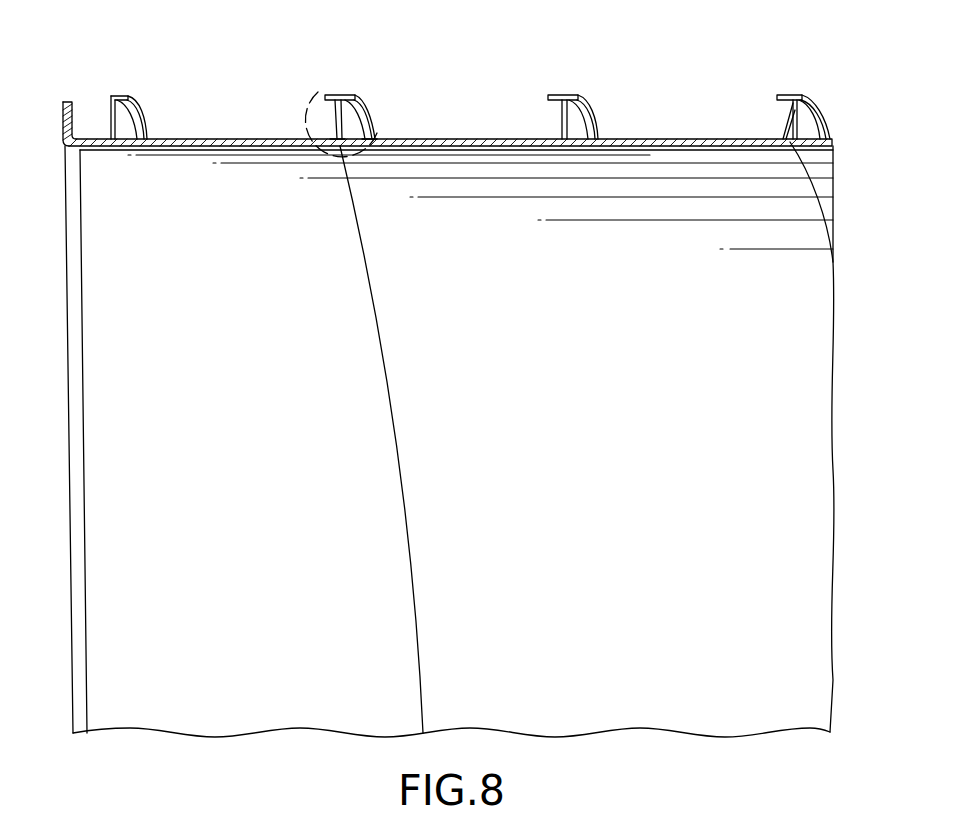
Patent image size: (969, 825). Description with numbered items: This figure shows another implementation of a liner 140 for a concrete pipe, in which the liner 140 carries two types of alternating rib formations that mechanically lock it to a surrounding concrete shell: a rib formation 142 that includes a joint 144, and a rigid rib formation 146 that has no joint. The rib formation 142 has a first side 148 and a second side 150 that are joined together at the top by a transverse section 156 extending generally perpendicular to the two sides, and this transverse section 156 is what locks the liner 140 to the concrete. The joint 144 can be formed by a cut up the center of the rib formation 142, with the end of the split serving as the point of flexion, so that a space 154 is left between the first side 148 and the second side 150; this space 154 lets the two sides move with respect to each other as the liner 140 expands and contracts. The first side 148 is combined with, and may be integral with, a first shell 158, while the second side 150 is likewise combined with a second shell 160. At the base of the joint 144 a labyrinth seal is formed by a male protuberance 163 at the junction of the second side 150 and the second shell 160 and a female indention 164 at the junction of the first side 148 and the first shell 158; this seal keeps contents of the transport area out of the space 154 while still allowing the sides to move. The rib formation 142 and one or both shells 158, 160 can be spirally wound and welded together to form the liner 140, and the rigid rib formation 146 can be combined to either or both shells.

The liner 140 is at (262, 407).
The rib formation 142 is at (338, 112).
The joint 144 is at (352, 100).
The rigid rib formation 146 is at (557, 95).
The first side 148 is at (336, 140).
The second side 150 is at (370, 125).
The space 154 is at (368, 112).
The transverse section 156 is at (335, 95).
The first shell 158 is at (178, 139).
The second shell 160 is at (468, 138).
The male protuberance 163 is at (372, 139).
The female indention 164 is at (328, 118).